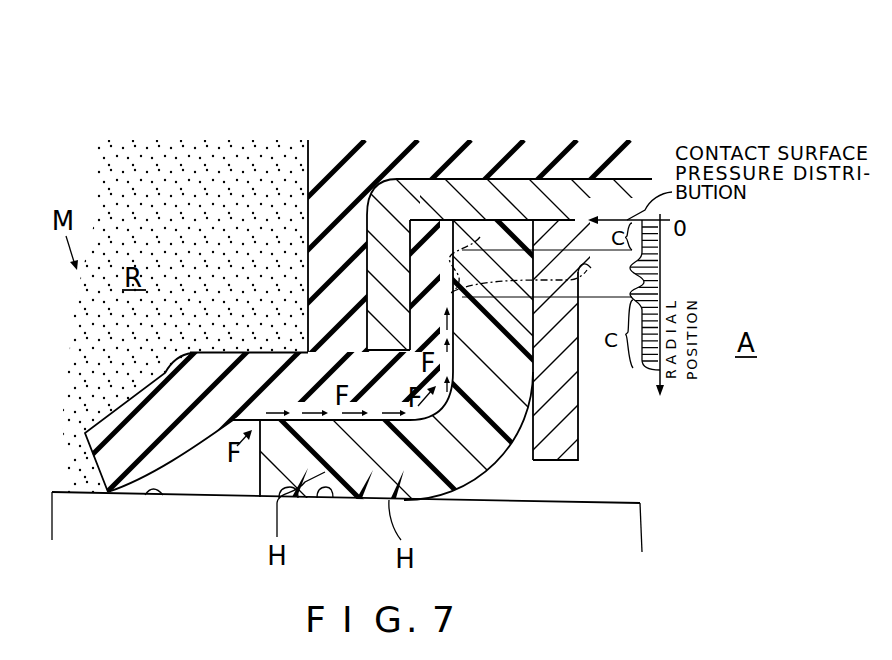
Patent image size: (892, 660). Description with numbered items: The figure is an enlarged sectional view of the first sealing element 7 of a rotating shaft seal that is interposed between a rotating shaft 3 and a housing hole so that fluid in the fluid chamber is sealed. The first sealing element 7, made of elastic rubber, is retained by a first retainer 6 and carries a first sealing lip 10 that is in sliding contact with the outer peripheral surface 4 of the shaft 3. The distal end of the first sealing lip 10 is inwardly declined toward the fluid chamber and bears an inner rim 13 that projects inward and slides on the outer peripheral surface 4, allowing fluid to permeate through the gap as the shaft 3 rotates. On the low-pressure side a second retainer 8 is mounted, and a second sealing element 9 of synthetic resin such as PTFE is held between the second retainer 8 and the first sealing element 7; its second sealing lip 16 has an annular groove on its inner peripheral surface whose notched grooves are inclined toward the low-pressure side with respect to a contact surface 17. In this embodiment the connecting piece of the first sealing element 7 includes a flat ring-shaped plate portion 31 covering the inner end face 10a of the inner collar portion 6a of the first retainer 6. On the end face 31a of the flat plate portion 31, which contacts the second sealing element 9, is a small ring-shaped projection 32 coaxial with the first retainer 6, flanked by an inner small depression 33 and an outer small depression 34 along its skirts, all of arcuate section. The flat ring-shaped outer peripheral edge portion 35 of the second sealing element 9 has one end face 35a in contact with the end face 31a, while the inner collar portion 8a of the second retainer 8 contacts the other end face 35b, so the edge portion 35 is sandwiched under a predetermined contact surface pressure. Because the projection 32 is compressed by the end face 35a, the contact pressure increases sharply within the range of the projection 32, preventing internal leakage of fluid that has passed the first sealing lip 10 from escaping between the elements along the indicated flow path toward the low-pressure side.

The rotating shaft 3 is at (64, 482).
The outer peripheral surface 4 is at (147, 495).
The first retainer 6 is at (583, 172).
The inner collar portion 6a is at (380, 277).
The first sealing element 7 is at (306, 166).
The second retainer 8 is at (583, 456).
The inner collar portion 8a is at (542, 452).
The second sealing element 9 is at (484, 484).
The first sealing lip 10 is at (184, 470).
The inner end face 10a is at (383, 223).
The inner rim 13 is at (380, 345).
The second sealing lip 16 is at (367, 510).
The contact surface 17 is at (346, 490).
The flat ring-shaped plate portion 31 is at (423, 313).
The end face 31a is at (452, 214).
The small ring-shaped projection 32 is at (458, 257).
The inner small depression 33 is at (601, 280).
The outer small depression 34 is at (480, 237).
The outer peripheral edge portion 35 is at (570, 412).
The one end face 35a is at (509, 437).
The other end face 35b is at (562, 356).